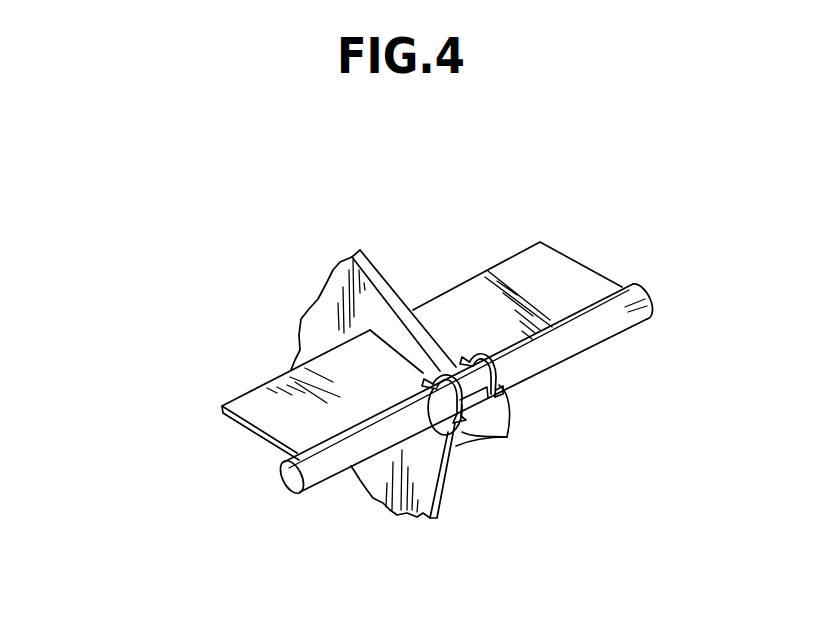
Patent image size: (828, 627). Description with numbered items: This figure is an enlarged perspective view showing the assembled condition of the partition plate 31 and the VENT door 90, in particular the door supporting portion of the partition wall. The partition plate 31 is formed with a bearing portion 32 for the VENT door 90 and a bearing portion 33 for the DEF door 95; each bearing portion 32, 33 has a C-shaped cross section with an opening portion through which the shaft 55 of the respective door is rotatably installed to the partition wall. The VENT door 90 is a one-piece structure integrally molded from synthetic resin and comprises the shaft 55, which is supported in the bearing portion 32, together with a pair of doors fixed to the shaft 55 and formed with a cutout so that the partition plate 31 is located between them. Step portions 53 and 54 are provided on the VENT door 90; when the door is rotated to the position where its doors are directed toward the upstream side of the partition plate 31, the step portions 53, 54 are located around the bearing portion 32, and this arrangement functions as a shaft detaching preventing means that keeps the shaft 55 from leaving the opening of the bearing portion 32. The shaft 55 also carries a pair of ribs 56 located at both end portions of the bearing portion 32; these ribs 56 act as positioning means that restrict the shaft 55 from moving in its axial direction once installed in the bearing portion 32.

The partition plate 31 is at (367, 260).
The bearing portion 32 is at (484, 306).
The bearing portion 33 is at (486, 411).
The step portion 53 is at (437, 378).
The step portion 54 is at (473, 354).
The shaft 55 is at (292, 478).
The rib 56 is at (507, 437).
The VENT door 90 is at (375, 390).
The DEF door 95 is at (233, 432).